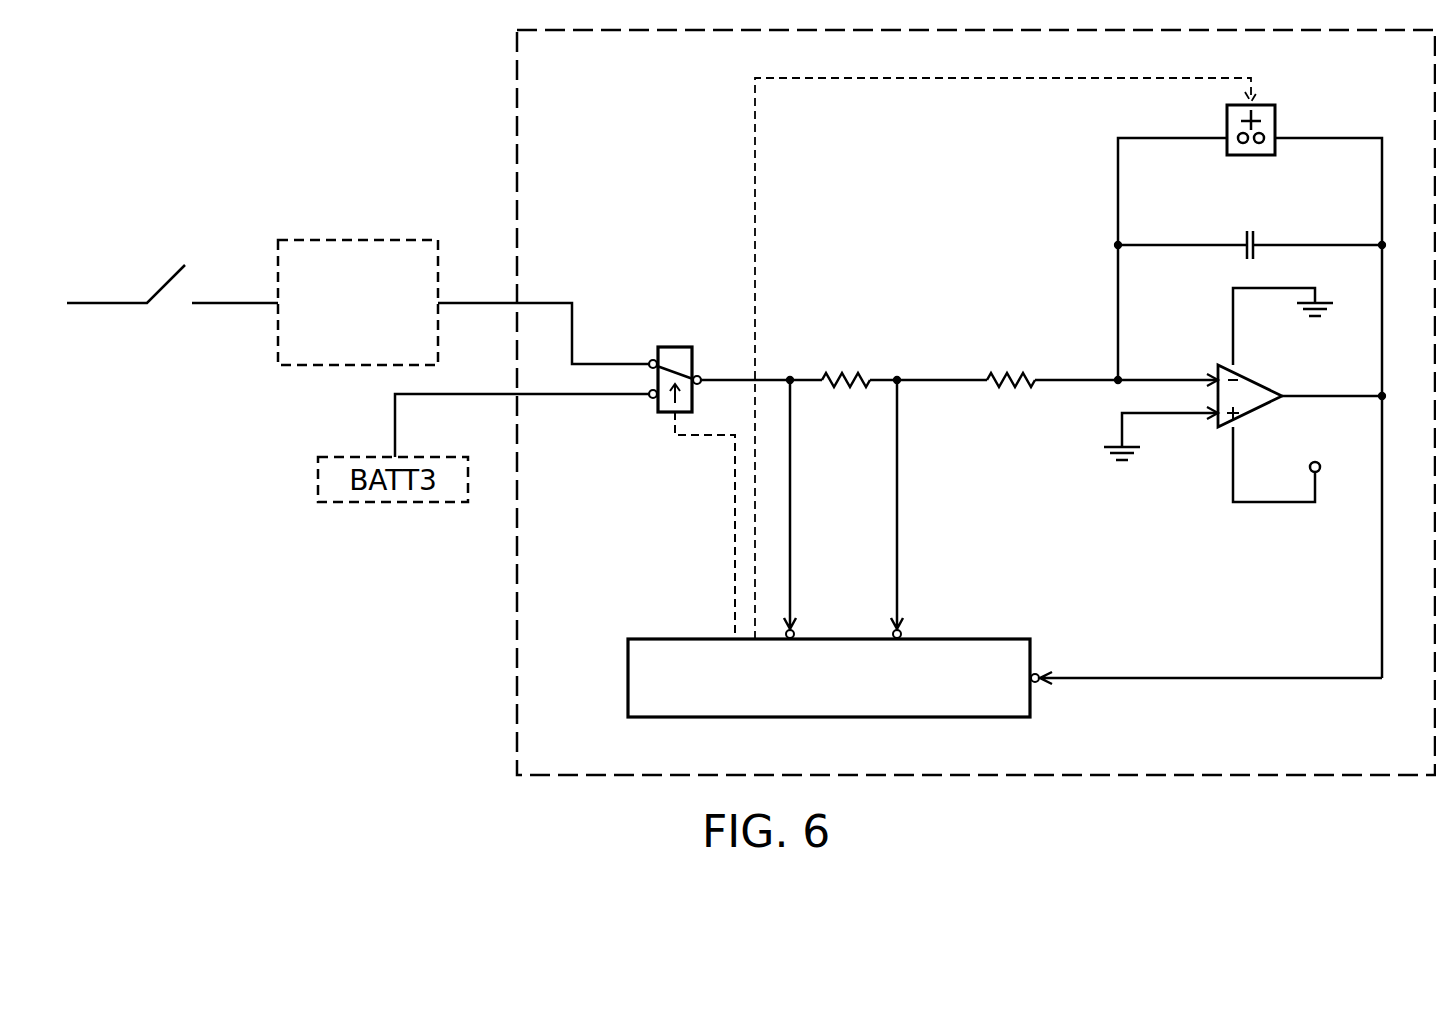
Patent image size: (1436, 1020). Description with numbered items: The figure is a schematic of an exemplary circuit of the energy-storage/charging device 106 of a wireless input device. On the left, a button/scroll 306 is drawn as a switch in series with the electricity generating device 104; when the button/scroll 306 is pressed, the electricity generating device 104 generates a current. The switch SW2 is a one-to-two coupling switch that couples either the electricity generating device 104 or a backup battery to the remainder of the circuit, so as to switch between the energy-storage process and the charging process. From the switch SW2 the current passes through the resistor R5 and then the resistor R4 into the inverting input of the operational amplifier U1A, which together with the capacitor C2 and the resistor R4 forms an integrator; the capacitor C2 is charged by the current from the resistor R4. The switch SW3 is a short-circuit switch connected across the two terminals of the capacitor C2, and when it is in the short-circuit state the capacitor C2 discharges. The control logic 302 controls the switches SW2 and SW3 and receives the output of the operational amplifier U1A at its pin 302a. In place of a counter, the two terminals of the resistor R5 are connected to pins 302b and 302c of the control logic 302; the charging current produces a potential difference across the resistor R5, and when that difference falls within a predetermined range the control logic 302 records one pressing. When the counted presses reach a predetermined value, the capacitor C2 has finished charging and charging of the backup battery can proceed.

The energy-storage/charging device 106 is at (517, 93).
The button/scroll 306 is at (172, 257).
The electricity generating device 104 is at (418, 217).
The control logic 302 is at (1000, 638).
The pin of the control logic 302a is at (1040, 683).
The pin of the control logic 302b is at (902, 630).
The pin of the control logic 302c is at (795, 630).
The switch SW2 is at (675, 345).
The switch SW3 is at (1293, 80).
The resistor R5 is at (846, 363).
The resistor R4 is at (1012, 363).
The capacitor C2 is at (1252, 225).
The operational amplifier U1A is at (1275, 355).